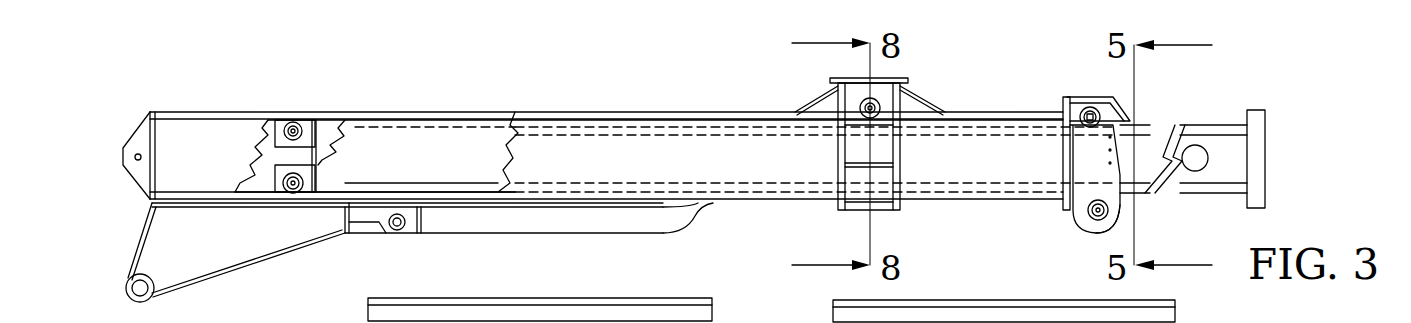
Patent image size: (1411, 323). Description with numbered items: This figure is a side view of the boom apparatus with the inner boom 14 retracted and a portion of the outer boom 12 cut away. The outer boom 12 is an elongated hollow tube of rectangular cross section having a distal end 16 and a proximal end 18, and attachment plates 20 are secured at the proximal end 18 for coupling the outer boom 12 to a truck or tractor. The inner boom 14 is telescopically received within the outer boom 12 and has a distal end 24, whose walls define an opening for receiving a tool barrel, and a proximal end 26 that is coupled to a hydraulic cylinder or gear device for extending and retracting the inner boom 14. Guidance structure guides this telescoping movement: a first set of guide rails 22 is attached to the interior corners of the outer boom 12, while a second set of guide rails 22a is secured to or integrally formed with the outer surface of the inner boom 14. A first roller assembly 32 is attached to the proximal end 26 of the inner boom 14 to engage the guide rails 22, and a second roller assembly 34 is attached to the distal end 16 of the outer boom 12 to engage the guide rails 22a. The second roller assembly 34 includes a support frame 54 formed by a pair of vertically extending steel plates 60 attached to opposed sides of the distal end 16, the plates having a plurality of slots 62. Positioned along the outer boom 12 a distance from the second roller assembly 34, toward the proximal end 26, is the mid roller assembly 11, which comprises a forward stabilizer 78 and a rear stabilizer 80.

The mid roller assembly 11 is at (914, 56).
The outer boom 12 is at (510, 112).
The inner boom 14 is at (1205, 142).
The distal end 16 is at (999, 96).
The proximal end 18 is at (198, 66).
The attachment plates 20 is at (218, 255).
The first set of guide rails 22 is at (452, 117).
The second set of guide rails 22a is at (363, 187).
The distal end 24 is at (1220, 93).
The proximal end 26 is at (266, 149).
The first roller assembly 32 is at (299, 88).
The second roller assembly 34 is at (1082, 70).
The support frame 54 is at (1072, 207).
The steel plates 60 is at (1104, 230).
The slots 62 is at (1071, 108).
The forward stabilizer 78 is at (939, 81).
The rear stabilizer 80 is at (806, 87).